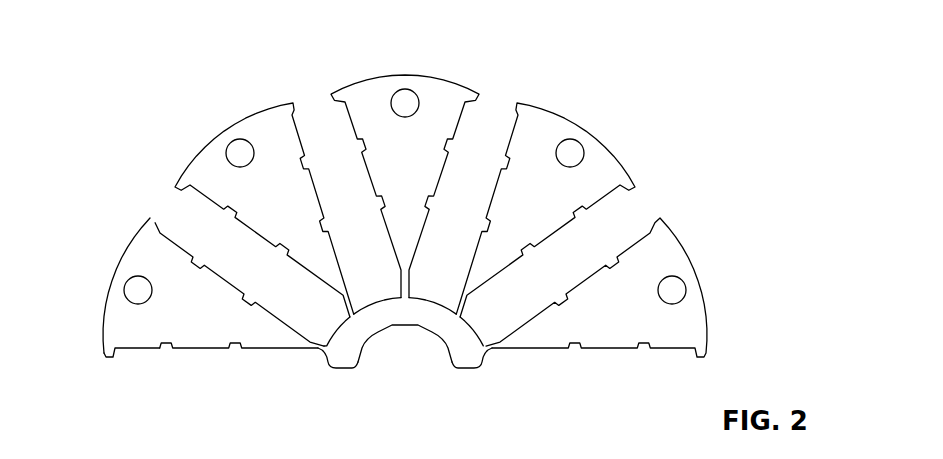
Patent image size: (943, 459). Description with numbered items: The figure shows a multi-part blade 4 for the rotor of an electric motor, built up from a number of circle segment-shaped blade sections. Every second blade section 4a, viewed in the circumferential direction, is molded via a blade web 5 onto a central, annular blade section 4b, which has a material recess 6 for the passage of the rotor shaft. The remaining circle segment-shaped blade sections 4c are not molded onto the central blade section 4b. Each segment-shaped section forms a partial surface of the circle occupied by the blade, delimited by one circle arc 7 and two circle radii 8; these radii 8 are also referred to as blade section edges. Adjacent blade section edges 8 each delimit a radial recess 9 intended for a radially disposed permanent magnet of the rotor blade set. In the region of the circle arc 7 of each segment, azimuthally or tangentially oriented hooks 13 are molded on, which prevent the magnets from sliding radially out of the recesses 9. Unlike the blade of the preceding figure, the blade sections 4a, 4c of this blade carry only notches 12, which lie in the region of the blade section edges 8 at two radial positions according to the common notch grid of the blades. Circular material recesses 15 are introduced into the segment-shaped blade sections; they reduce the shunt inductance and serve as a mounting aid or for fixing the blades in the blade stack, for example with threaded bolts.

The multi-part blade 4 is at (698, 118).
The circle segment-shaped blade section 4a is at (694, 244).
The central annular blade section 4b is at (342, 371).
The circle segment-shaped blade section 4c is at (566, 107).
The blade web 5 is at (492, 364).
The material recess 6 is at (405, 364).
The circle arc 7 is at (414, 76).
The circle radius 8 is at (634, 240).
The radial recess 9 is at (321, 130).
The notch 12 is at (186, 258).
The tangential hook 13 is at (105, 357).
The circular material recess 15 is at (134, 290).